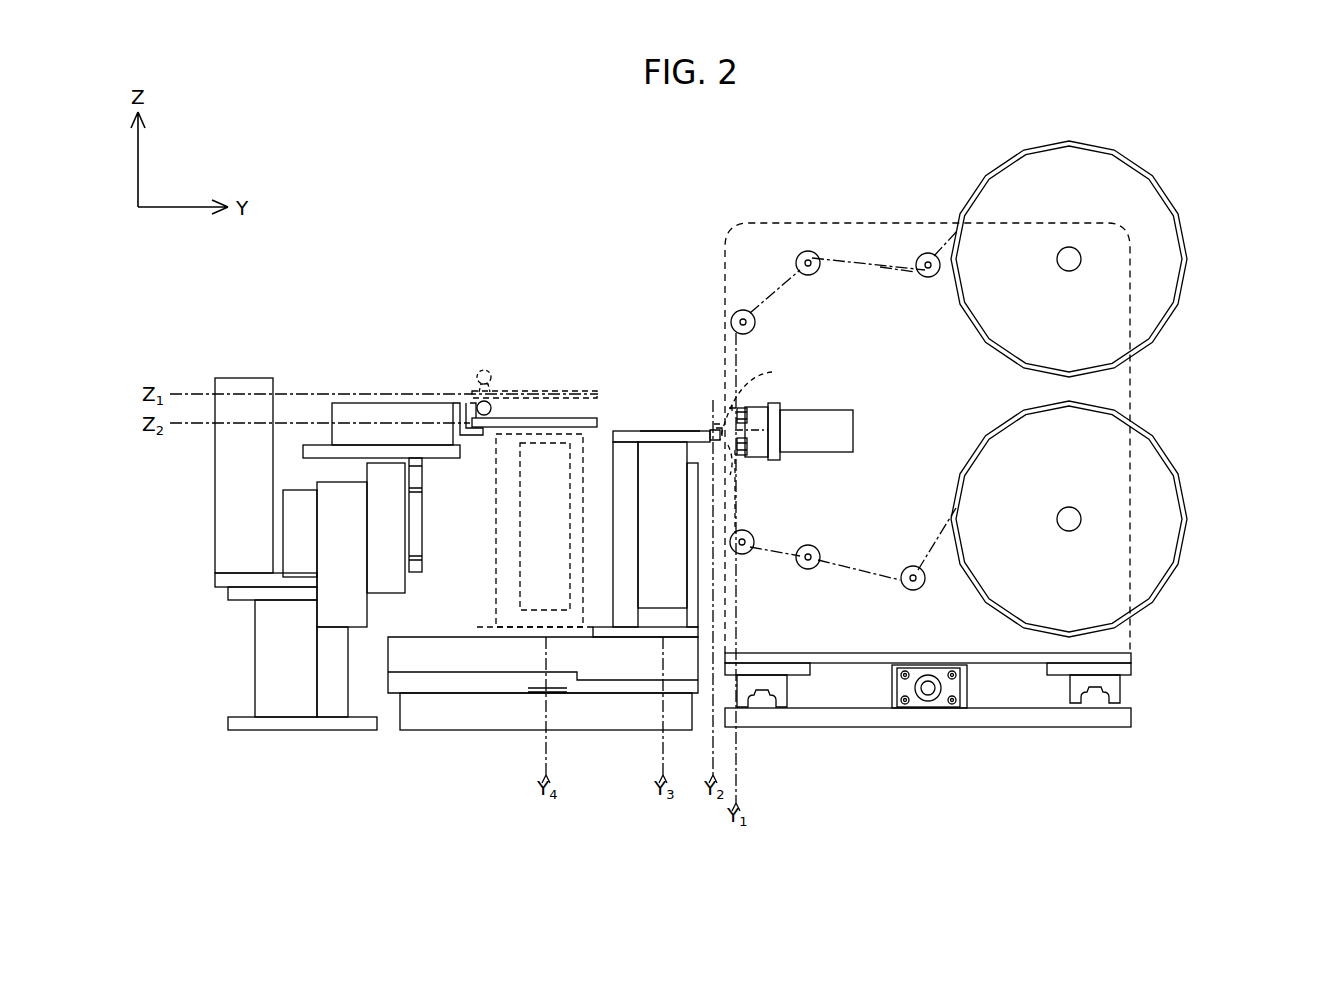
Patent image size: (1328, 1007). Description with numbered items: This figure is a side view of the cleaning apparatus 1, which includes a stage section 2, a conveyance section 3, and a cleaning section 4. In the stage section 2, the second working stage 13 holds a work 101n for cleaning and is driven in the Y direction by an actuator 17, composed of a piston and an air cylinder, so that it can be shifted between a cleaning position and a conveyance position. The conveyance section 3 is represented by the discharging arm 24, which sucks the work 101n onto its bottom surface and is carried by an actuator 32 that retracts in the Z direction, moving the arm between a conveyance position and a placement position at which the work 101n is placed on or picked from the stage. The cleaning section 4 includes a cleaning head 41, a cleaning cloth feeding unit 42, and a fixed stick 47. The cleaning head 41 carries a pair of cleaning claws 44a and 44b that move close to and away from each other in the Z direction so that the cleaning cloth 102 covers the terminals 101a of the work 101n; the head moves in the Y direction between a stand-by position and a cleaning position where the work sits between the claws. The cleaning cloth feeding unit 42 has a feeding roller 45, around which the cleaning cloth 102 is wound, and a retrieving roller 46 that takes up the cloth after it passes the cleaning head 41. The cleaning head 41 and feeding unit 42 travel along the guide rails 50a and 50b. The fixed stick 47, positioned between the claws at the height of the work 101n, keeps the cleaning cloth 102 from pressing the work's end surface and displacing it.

The cleaning apparatus 1 is at (1214, 92).
The stage section 2 is at (660, 278).
The conveyance section 3 is at (396, 316).
The cleaning section 4 is at (945, 136).
The second working stage 13 is at (628, 423).
The actuator 17 is at (433, 690).
The discharging arm 24 is at (517, 418).
The actuator 32 is at (414, 572).
The cleaning head 41 is at (853, 432).
The cleaning cloth feeding unit 42 is at (1210, 182).
The cleaning claw 44a is at (750, 412).
The cleaning claw 44b is at (750, 450).
The feeding roller 45 is at (1188, 260).
The retrieving roller 46 is at (1188, 520).
The fixed stick 47 is at (732, 470).
The guide rail 50a is at (764, 700).
The guide rail 50b is at (1089, 700).
The terminals 101a is at (712, 428).
The work 101n is at (658, 423).
The cleaning cloth 102 is at (850, 264).